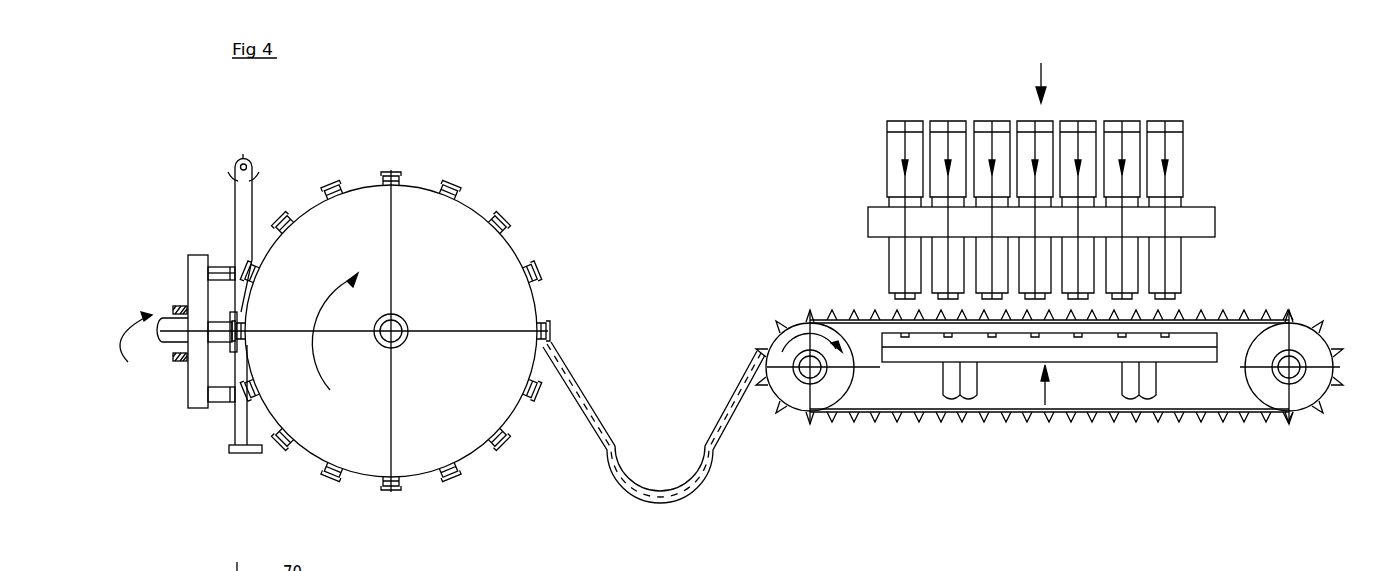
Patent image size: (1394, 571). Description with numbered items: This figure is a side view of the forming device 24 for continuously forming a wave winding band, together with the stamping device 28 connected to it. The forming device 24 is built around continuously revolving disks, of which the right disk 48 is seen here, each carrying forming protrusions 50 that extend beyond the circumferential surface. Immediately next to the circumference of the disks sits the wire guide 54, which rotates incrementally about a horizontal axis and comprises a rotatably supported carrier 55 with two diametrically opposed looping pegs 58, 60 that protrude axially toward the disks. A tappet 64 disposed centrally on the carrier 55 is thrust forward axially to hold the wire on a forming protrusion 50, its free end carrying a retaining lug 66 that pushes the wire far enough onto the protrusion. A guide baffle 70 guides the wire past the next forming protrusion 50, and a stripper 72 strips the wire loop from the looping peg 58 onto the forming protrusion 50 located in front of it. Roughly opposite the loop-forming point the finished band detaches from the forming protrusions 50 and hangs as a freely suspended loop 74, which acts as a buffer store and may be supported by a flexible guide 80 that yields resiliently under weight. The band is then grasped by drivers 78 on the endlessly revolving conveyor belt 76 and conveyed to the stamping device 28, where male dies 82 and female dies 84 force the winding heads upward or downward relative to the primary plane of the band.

The forming device 24 is at (413, 182).
The right disk 48 is at (452, 232).
The forming protrusions 50 is at (508, 232).
The stripper 72 is at (247, 198).
The guide baffle 70 is at (232, 450).
The wire guide 54 is at (196, 259).
The looping peg 58 is at (218, 266).
The looping peg 60 is at (213, 405).
The tappet 64 is at (215, 337).
The carrier 55 is at (210, 347).
The retaining lug 66 is at (233, 317).
The flexible guide 80 is at (687, 500).
The freely suspended loop 74 is at (605, 447).
The conveyor belt 76 is at (858, 412).
The male dies 82 is at (1185, 298).
The female dies 84 is at (1177, 335).
The drivers 78 is at (867, 317).
The stamping device 28 is at (1168, 120).